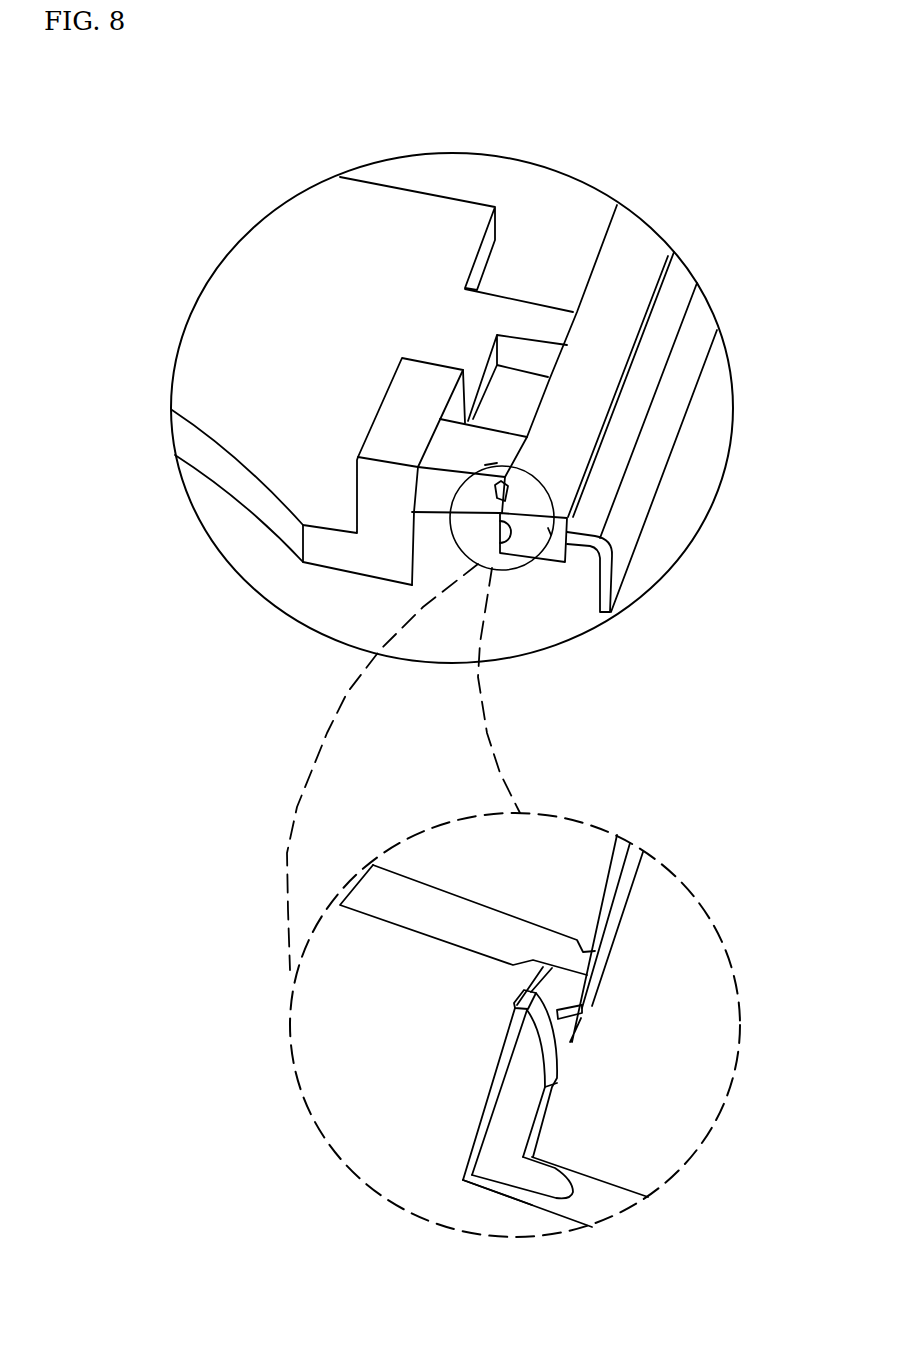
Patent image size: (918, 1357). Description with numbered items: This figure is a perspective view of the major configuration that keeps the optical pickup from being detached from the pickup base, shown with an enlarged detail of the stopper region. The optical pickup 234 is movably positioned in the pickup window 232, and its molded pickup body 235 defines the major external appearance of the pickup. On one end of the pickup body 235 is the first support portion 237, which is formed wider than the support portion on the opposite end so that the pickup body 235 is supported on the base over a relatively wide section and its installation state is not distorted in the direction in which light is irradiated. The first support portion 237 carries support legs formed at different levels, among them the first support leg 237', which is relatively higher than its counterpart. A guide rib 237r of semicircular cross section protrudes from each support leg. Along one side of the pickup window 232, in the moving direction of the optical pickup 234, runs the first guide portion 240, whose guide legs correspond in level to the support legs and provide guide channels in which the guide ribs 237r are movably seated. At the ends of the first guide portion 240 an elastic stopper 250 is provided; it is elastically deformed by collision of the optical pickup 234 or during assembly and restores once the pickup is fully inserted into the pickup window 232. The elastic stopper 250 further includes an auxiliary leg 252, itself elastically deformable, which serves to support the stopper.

The pickup window 232 is at (575, 237).
The optical pickup 234 is at (237, 525).
The pickup body 235 is at (410, 222).
The first support portion 237 is at (667, 384).
The first support leg 237' is at (696, 938).
The guide rib 237r is at (578, 963).
The first guide portion 240 is at (663, 468).
The elastic stopper 250 is at (540, 1033).
The auxiliary leg 252 is at (573, 1007).